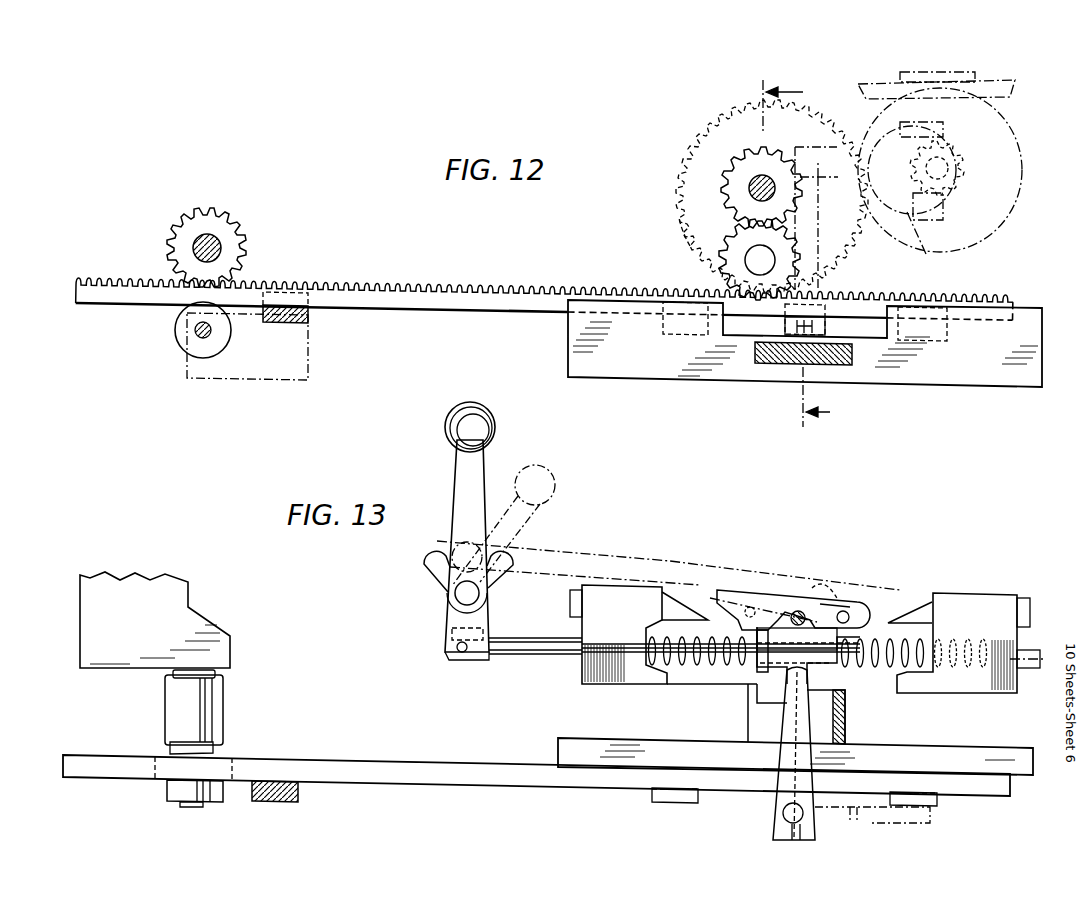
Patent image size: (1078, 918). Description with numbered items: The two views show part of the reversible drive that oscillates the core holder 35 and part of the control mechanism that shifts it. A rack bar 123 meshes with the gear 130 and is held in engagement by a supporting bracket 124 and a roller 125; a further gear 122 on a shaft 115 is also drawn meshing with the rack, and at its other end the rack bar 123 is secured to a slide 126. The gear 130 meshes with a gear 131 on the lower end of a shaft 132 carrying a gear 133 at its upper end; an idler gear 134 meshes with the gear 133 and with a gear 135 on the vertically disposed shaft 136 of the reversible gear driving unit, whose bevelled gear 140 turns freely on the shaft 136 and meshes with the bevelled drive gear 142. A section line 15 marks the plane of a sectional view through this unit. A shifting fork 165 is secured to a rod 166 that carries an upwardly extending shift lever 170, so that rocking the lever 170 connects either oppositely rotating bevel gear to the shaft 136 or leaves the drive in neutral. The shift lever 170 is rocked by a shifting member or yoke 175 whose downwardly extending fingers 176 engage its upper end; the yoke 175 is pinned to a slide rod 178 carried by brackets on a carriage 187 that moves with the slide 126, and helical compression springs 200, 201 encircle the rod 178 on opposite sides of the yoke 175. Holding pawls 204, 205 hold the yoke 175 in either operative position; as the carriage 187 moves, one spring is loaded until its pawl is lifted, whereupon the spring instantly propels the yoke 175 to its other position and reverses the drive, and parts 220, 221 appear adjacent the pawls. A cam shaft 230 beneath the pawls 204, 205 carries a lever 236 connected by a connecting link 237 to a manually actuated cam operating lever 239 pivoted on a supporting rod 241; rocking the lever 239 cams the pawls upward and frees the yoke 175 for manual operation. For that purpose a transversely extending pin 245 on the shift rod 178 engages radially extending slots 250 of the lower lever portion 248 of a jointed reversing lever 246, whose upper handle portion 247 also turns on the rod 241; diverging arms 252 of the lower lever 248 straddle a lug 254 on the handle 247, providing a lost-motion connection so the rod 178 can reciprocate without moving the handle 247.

In FIG. 12, the section line 15- 15 is at (802, 253).
In FIG. 13, the core holder 35 is at (72, 613).
In FIG. 12, the shaft 115 is at (194, 244).
In FIG. 13, the shaft 115 is at (187, 805).
In FIG. 12, the pinion gear 122 is at (188, 218).
In FIG. 13, the pinion gear 122 is at (154, 756).
In FIG. 12, the rack bar 123 is at (431, 292).
In FIG. 13, the rack bar 123 is at (536, 775).
In FIG. 12, the supporting bracket 124 is at (304, 323).
In FIG. 13, the supporting bracket 124 is at (283, 803).
In FIG. 12, the roller 125 is at (178, 334).
In FIG. 12, the slide 126 is at (980, 382).
In FIG. 13, the slide 126 is at (573, 747).
In FIG. 12, the gear 130 is at (730, 234).
In FIG. 12, the gear 131 is at (728, 194).
In FIG. 12, the shaft 132 is at (754, 180).
In FIG. 12, the gear 133 is at (736, 108).
In FIG. 12, the idler gear 134 is at (927, 216).
In FIG. 12, the gear 135 is at (948, 193).
In FIG. 12, the shaft 136 is at (956, 172).
In FIG. 12, the bevelled gear 140 is at (1004, 119).
In FIG. 12, the bevelled drive gear 142 is at (866, 92).
In FIG. 12, the shifting fork 165 is at (933, 242).
In FIG. 13, the shifting fork 165 is at (870, 833).
In FIG. 12, the rod 166 is at (820, 302).
In FIG. 13, the rod 166 is at (788, 811).
In FIG. 12, the shift lever 170 is at (823, 327).
In FIG. 13, the shift lever 170 is at (845, 694).
In FIG. 13, the shifting member or yoke 175 is at (780, 654).
In FIG. 13, the fingers 176 is at (770, 703).
In FIG. 13, the slide rod 178 is at (523, 638).
In FIG. 13, the carriage 187 is at (572, 670).
In FIG. 13, the helical compression spring 200 is at (675, 672).
In FIG. 13, the helical compression spring 201 is at (907, 673).
In FIG. 13, the holding pawl 204 is at (731, 592).
In FIG. 13, the holding pawl 205 is at (863, 599).
In FIG. 13, the wedge 220 is at (677, 605).
In FIG. 13, the wedge 221 is at (922, 603).
In FIG. 13, the cam shaft 230 is at (798, 626).
In FIG. 13, the lever 236 is at (833, 586).
In FIG. 13, the connecting link 237 is at (600, 538).
In FIG. 13, the cam operating lever 239 is at (580, 459).
In FIG. 13, the supporting rod 241 is at (455, 593).
In FIG. 13, the pin 245 is at (458, 654).
In FIG. 13, the jointed reversing lever 246 is at (436, 490).
In FIG. 13, the upper handle portion 247 is at (456, 425).
In FIG. 13, the lower lever portion 248 is at (453, 628).
In FIG. 13, the slots 250 is at (466, 652).
In FIG. 13, the diverging arms 252 is at (428, 552).
In FIG. 13, the lug 254 is at (454, 535).